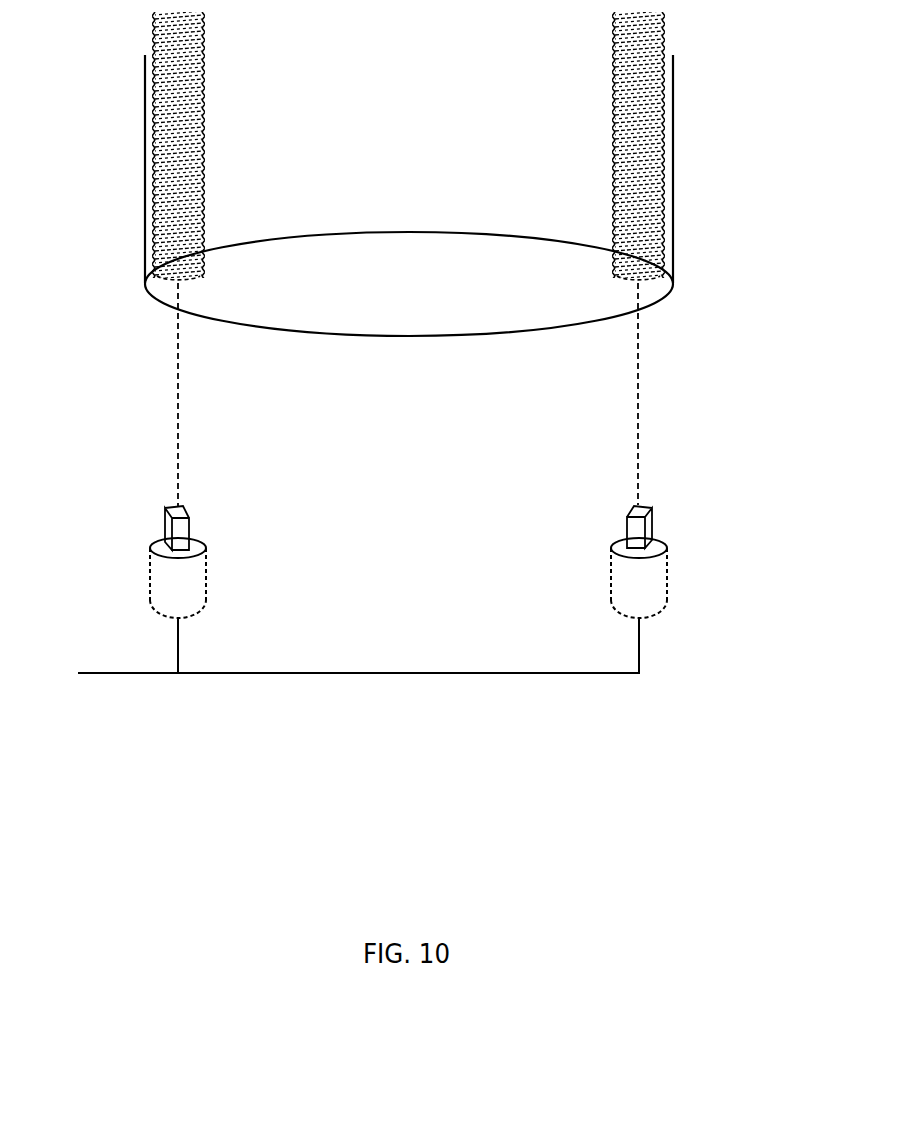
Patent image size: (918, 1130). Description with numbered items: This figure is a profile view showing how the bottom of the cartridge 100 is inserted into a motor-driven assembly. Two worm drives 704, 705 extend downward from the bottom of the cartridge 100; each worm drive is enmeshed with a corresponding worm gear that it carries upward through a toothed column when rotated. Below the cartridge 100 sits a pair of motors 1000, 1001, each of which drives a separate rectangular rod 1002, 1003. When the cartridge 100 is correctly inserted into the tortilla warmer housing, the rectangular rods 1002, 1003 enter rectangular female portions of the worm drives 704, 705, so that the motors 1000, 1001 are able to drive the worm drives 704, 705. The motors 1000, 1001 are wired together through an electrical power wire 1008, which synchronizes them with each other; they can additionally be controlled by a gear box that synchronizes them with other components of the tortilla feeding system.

The cartridge 100 is at (145, 135).
The worm drive 704 is at (200, 77).
The worm drive 705 is at (620, 88).
The motor 1000 is at (162, 585).
The motor 1001 is at (663, 590).
The rectangular rod 1002 is at (165, 528).
The rectangular rod 1003 is at (649, 520).
The electrical power wire 1008 is at (390, 673).